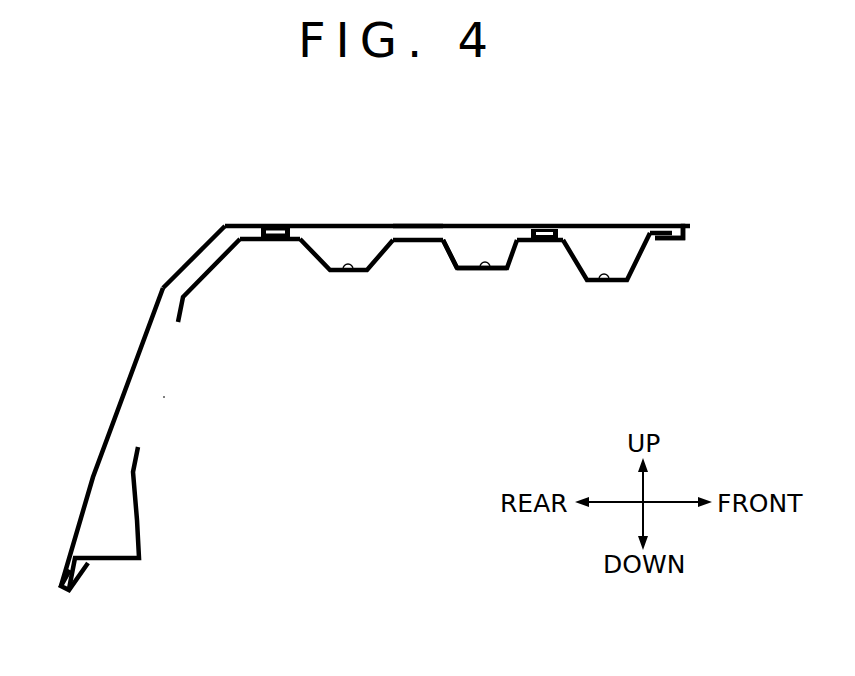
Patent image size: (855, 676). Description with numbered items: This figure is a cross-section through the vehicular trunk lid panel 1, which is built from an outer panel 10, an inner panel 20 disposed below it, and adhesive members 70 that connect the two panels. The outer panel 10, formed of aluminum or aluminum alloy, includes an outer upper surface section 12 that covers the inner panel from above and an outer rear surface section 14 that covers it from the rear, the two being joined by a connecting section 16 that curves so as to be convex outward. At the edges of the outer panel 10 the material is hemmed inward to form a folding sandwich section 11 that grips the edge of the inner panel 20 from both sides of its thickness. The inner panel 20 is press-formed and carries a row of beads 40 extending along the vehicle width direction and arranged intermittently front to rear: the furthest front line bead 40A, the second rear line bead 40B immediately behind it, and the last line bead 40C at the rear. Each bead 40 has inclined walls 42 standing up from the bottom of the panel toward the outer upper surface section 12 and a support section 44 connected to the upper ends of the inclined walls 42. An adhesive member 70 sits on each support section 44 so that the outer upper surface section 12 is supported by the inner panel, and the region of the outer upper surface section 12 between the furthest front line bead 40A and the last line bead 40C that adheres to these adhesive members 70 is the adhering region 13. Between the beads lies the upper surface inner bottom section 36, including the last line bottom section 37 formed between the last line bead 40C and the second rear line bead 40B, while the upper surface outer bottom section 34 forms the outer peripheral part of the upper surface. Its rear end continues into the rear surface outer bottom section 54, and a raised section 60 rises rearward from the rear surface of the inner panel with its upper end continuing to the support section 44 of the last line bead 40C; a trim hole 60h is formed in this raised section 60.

The vehicular trunk lid panel 1 is at (677, 125).
The outer panel 10 is at (70, 175).
The folding sandwich section 11 is at (687, 227).
The outer upper surface section 12 is at (248, 218).
The adhering region 13 is at (397, 225).
The outer rear surface section 14 is at (148, 327).
The connecting section 16 is at (195, 254).
The inner panel 20 is at (634, 249).
The upper surface outer bottom section 34 is at (602, 284).
The upper surface inner bottom section 36 is at (484, 273).
The last line bottom section 37 is at (343, 275).
The bead 40 is at (517, 125).
The furthest front line bead 40A is at (568, 225).
The second rear line bead 40B is at (380, 225).
The last line bead 40C is at (312, 223).
The inclined wall 42 is at (470, 225).
The support section 44 is at (420, 225).
The rear surface outer bottom section 54 is at (140, 540).
The raised section 60 is at (182, 316).
The trim hole 60h is at (164, 395).
The adhesive member 70 is at (254, 226).